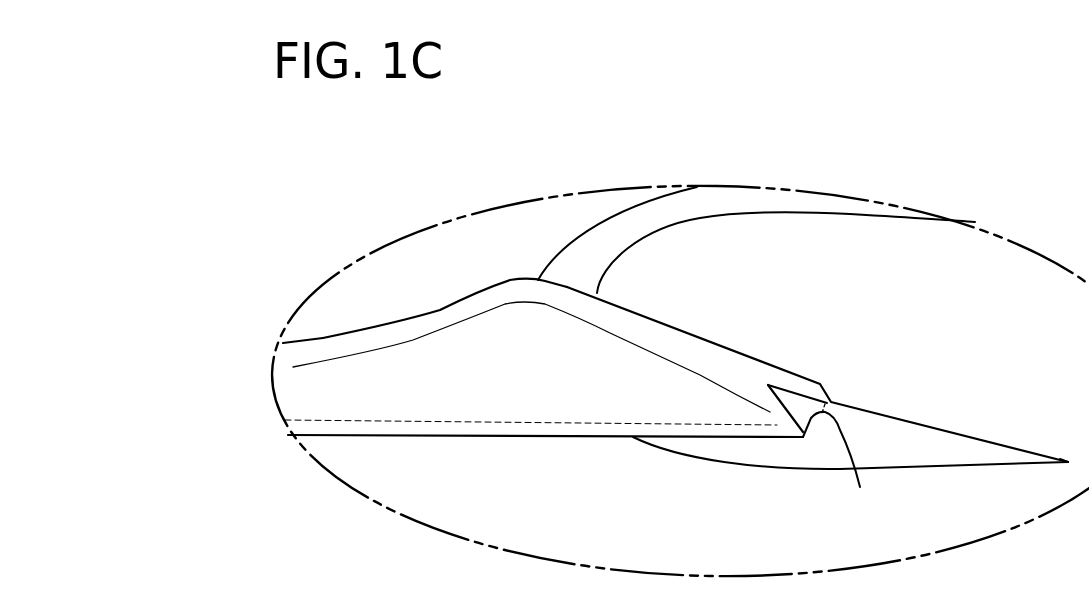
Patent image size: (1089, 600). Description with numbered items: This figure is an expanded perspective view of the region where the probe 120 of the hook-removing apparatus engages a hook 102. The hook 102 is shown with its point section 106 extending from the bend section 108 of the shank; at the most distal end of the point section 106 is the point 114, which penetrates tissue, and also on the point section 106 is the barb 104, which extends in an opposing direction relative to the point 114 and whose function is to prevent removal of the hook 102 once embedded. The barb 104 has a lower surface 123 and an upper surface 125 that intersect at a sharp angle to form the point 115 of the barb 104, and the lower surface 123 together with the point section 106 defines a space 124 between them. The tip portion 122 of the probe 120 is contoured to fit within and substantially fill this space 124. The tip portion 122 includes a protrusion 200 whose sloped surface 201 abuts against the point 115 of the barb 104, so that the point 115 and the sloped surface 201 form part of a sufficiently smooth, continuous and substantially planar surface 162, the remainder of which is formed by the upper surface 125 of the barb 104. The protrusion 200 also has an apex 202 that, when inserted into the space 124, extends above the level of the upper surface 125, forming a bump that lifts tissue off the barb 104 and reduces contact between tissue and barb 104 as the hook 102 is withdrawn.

The hook 102 is at (606, 192).
The barb 104 is at (836, 403).
The point section 106 is at (983, 467).
The bend section 108 is at (562, 250).
The point 114 is at (1068, 462).
The point of the barb 115 is at (768, 385).
The probe 120 is at (315, 329).
The tip portion 122 is at (803, 445).
The lower surface 123 is at (849, 461).
The space 124 is at (737, 395).
The upper surface 125 is at (835, 384).
The substantially planar surface 162 is at (619, 277).
The protrusion 200 is at (610, 362).
The sloped surface 201 is at (662, 341).
The apex 202 is at (510, 278).